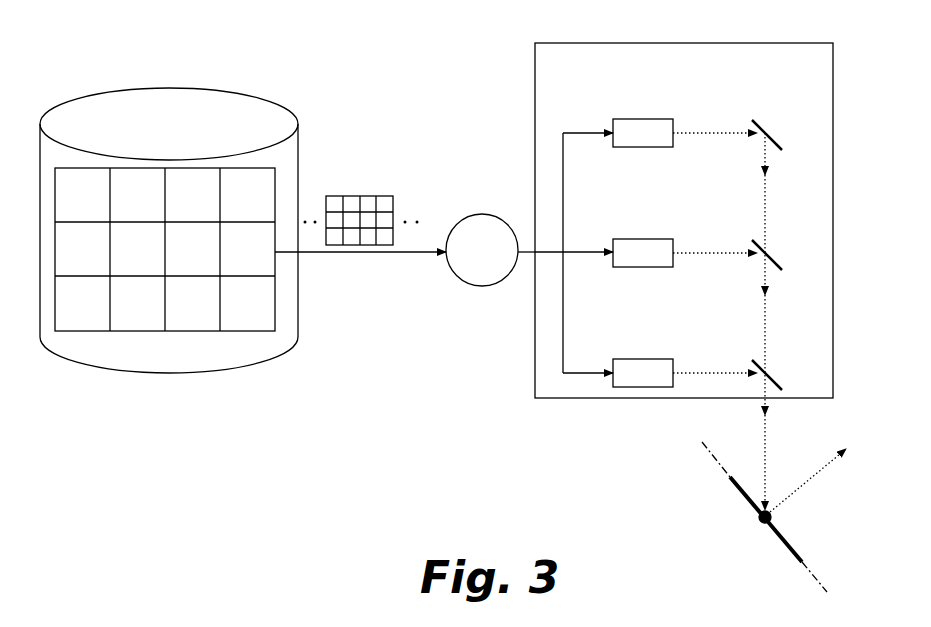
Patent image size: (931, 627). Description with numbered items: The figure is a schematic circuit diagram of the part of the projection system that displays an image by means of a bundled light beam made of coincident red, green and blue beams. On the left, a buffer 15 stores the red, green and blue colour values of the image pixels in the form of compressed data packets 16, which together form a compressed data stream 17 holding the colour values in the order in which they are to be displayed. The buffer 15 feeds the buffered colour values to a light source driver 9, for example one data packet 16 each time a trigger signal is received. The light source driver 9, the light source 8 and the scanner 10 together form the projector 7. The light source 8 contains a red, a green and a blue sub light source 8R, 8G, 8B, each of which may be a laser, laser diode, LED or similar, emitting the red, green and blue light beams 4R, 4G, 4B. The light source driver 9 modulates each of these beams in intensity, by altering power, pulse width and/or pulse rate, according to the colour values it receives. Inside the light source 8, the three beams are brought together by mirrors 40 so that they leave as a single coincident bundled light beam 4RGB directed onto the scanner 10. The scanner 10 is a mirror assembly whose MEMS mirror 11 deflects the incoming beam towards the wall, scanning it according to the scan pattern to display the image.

The buffer 15 is at (200, 124).
The compressed data packet 16 is at (195, 331).
The compressed data stream 17 is at (374, 185).
The projector 7 is at (463, 98).
The light source driver 9 is at (484, 213).
The light source 8 is at (834, 169).
The red sub light source 8R is at (636, 118).
The green sub light source 8G is at (634, 238).
The blue sub light source 8B is at (636, 358).
The red light beam 4R is at (706, 128).
The green light beam 4G is at (706, 246).
The blue light beam 4B is at (707, 367).
The beam combining mirror 40 is at (773, 138).
The bundled light beam 4RGB is at (764, 472).
The scanner 10 is at (728, 521).
The MEMS mirror 11 is at (795, 547).